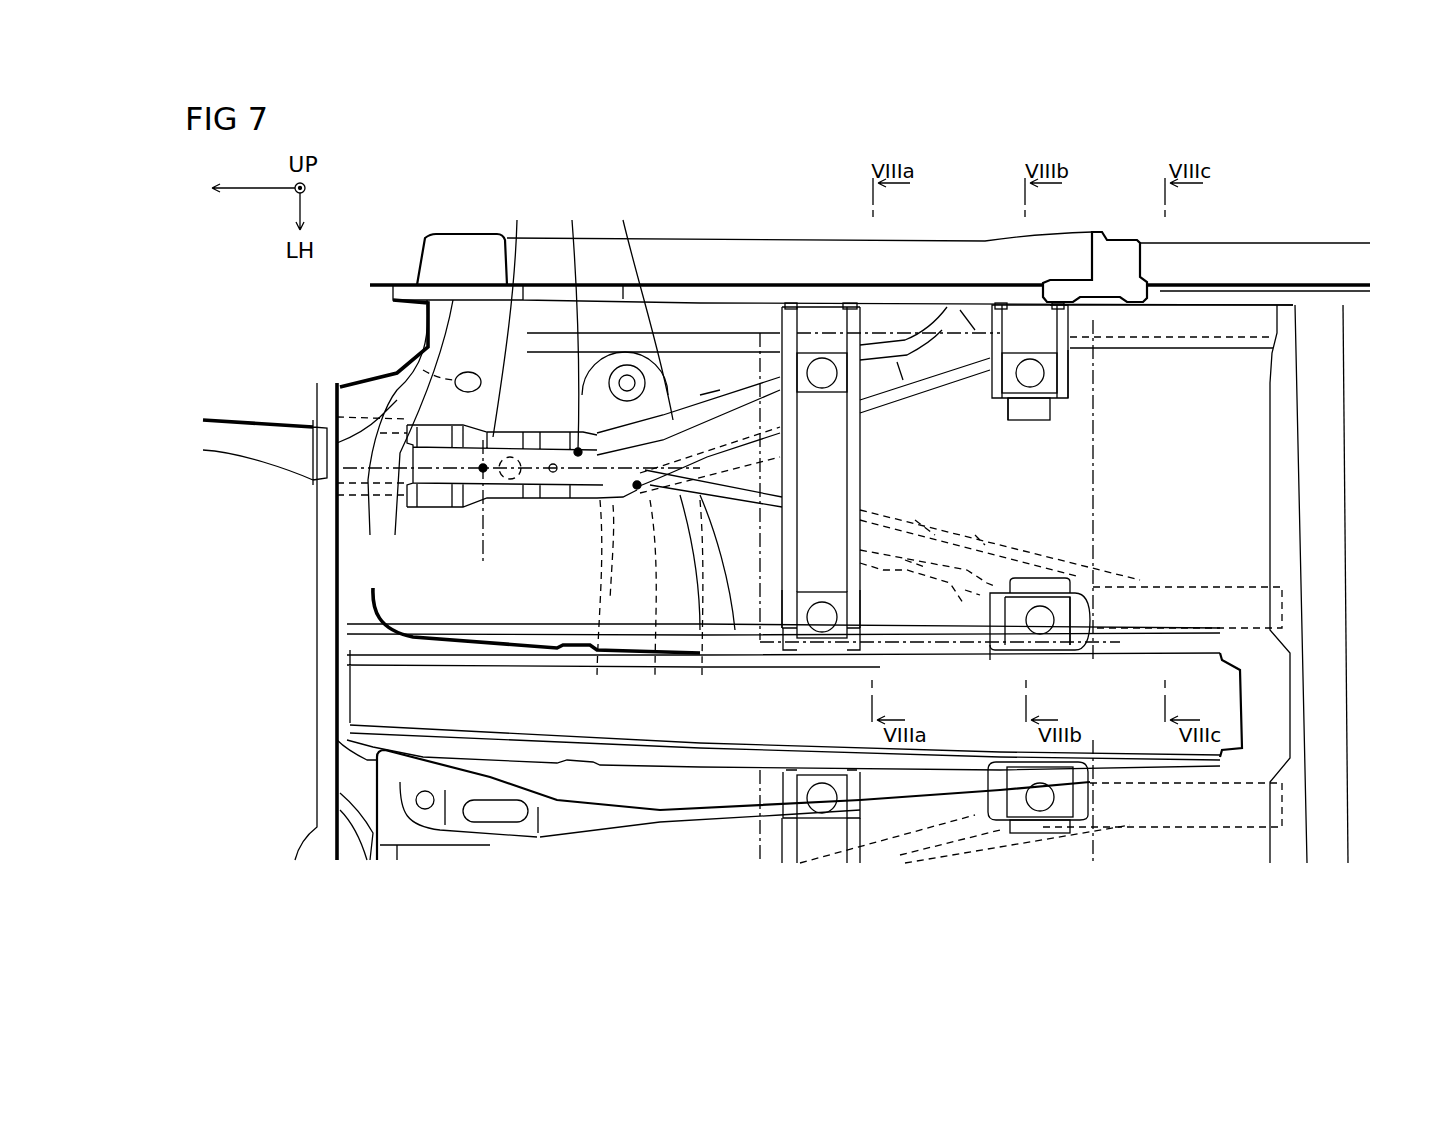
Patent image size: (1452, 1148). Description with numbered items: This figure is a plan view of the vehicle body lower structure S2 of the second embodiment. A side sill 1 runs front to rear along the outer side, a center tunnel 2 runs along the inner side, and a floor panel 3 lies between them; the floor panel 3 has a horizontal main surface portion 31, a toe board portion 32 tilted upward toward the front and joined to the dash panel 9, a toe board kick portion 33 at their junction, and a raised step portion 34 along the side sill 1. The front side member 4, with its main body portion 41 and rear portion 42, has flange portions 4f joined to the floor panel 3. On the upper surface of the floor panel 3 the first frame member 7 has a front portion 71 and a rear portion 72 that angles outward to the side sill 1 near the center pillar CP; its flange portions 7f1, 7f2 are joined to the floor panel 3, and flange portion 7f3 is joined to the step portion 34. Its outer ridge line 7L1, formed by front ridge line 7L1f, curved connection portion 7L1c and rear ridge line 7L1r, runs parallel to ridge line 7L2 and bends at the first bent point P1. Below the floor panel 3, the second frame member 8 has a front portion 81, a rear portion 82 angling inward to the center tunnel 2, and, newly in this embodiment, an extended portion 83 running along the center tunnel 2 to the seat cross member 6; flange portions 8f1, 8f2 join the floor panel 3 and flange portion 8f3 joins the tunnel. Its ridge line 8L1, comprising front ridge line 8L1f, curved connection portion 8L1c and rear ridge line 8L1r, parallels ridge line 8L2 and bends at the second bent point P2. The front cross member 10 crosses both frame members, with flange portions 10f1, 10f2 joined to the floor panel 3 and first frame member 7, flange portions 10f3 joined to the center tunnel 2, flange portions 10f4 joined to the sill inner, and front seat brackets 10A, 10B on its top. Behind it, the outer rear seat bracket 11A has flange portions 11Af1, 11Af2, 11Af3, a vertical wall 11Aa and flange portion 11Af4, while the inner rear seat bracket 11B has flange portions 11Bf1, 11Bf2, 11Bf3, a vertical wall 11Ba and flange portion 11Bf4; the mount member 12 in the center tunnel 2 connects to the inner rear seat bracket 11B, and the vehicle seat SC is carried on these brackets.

The side sill 1 is at (1245, 245).
The center tunnel 2 is at (1265, 690).
The floor panel 3 is at (1215, 405).
The front side member 4 is at (312, 590).
The flange portion 4f is at (320, 412).
The seat cross member 6 is at (1349, 558).
The first frame member 7 is at (887, 410).
The flange portion 7f1 is at (705, 400).
The flange portion 7f2 is at (760, 455).
The flange portion 7f3 is at (975, 318).
The ridge line 7L1 is at (640, 195).
The front ridge line 7L1f is at (514, 316).
The curved connection portion 7L1c is at (568, 322).
The rear ridge line 7L1r is at (637, 307).
The ridge line 7L2 is at (543, 495).
The second frame member 8 is at (952, 515).
The flange portion 8f1 is at (975, 537).
The flange portion 8f2 is at (905, 560).
The flange portion 8f3 is at (968, 588).
The ridge line 8L1 is at (578, 697).
The front ridge line 8L1f is at (597, 602).
The curved connection portion 8L1c is at (650, 602).
The rear ridge line 8L1r is at (705, 602).
The ridge line 8L2 is at (915, 522).
The dash panel 9 is at (340, 383).
The front cross member 10 is at (850, 490).
The front seat bracket 10A is at (820, 393).
The front seat bracket 10B is at (820, 585).
The flange portion 10f1 is at (783, 830).
The flange portion 10f2 is at (862, 858).
The flange portion 10f3 is at (852, 770).
The flange portion 10f4 is at (848, 305).
The outer rear seat bracket 11A is at (1055, 400).
The vertical wall 11Aa is at (1030, 422).
The flange portion 11Af1 is at (992, 388).
The flange portion 11Af2 is at (1070, 378).
The flange portion 11Af3 is at (1058, 308).
The flange portion 11Af4 is at (1010, 420).
The inner rear seat bracket 11B is at (1087, 592).
The vertical wall 11Ba is at (1040, 580).
The flange portion 11Bf1 is at (993, 640).
The flange portion 11Bf2 is at (1092, 612).
The flange portion 11Bf3 is at (1088, 650).
The flange portion 11Bf4 is at (1075, 578).
The mount member 12 is at (1085, 718).
The main surface portion 31 is at (1140, 410).
The toe board portion 32 is at (445, 588).
The toe board kick portion 33 is at (483, 547).
The step portion 34 is at (1190, 320).
The main body portion 41 is at (260, 465).
The rear portion 42 is at (315, 520).
The front portion 71 is at (505, 447).
The rear portion 72 is at (683, 360).
The front portion 81 is at (620, 505).
The rear portion 82 is at (745, 540).
The extended portion 83 is at (1213, 585).
The center pillar CP is at (1147, 255).
The vehicle seat SC is at (1100, 470).
The first bent point P1 is at (578, 450).
The second bent point P2 is at (638, 490).
The vehicle body lower structure S2 is at (454, 204).